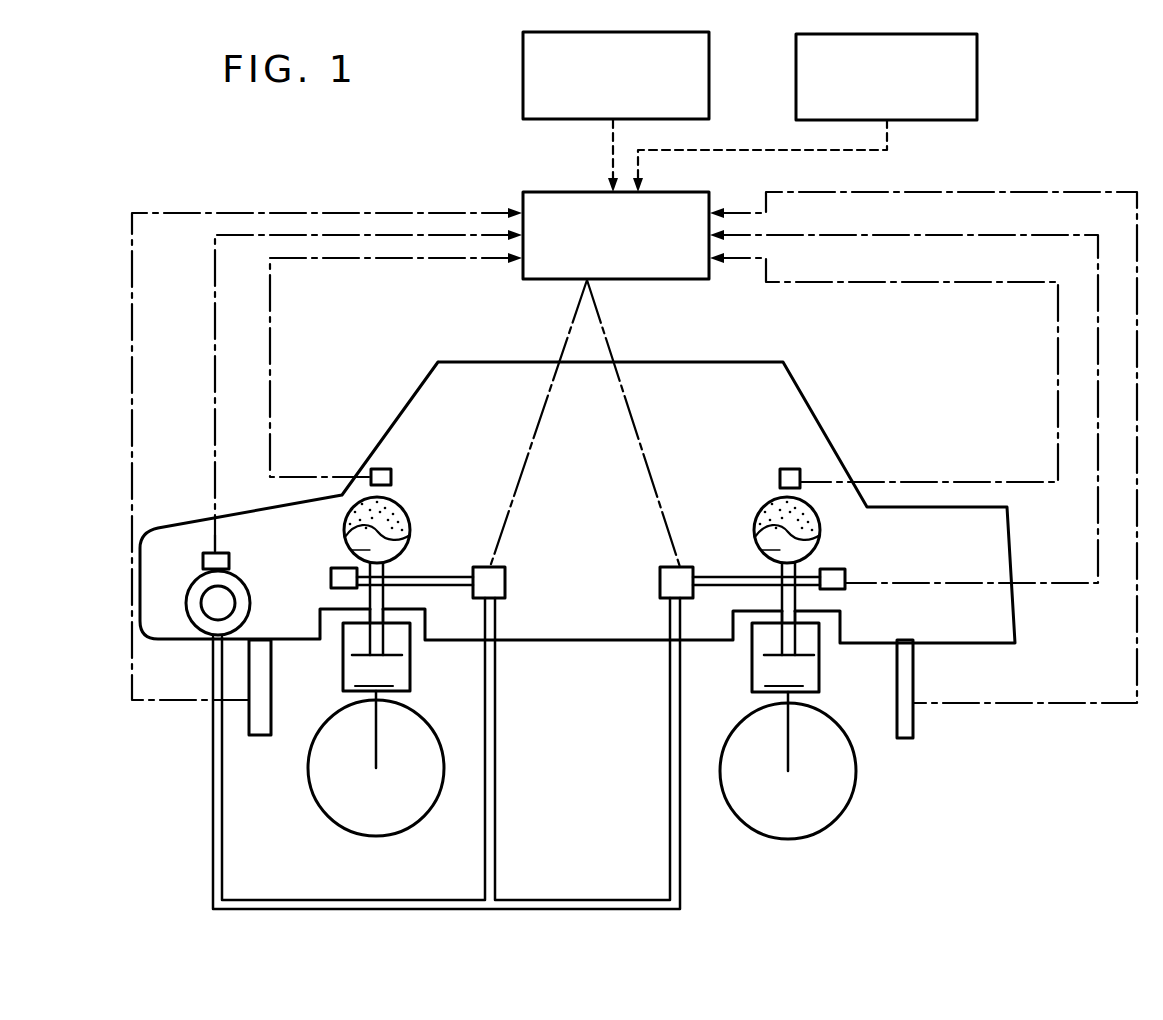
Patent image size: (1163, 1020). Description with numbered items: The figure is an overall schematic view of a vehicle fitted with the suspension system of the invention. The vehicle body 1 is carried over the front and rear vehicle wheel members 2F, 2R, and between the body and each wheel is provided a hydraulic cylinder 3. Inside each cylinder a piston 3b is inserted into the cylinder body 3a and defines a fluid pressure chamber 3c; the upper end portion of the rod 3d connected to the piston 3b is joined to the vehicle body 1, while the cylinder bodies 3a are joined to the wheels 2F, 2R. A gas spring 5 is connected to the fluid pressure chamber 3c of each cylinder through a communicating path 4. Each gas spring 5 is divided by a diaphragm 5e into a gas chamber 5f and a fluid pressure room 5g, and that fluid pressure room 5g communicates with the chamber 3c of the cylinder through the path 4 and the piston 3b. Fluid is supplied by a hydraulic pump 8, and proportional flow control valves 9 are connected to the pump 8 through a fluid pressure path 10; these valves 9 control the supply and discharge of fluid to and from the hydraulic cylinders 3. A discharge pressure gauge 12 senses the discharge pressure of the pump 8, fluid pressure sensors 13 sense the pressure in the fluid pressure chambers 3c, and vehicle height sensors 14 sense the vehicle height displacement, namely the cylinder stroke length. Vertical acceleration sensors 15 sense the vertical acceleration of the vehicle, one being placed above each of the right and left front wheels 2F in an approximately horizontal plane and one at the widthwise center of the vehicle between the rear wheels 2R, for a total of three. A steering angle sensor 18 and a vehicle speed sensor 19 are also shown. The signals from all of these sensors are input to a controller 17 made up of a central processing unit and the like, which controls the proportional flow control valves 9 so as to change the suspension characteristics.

The vehicle body 1 is at (738, 358).
The front vehicle wheel members 2F is at (422, 824).
The rear vehicle wheel members 2R is at (836, 824).
The hydraulic cylinder 3 is at (581, 669).
The cylinder body 3a is at (410, 650).
The piston 3b is at (354, 662).
The fluid pressure chamber 3c is at (579, 674).
The rod 3d is at (364, 602).
The communicating path 4 is at (384, 574).
The gas spring 5 is at (410, 518).
The diaphragm 5e is at (347, 540).
The gas chamber 5f is at (395, 505).
The fluid pressure chamber (fluid pressure room) 5g is at (374, 552).
The hydraulic pump 8 is at (204, 626).
The proportional flow control valves 9 is at (660, 580).
The fluid pressure path 10 is at (398, 898).
The discharge pressure gauge 12 is at (203, 556).
The fluid pressure sensors 13 is at (331, 578).
The vehicle height sensors 14 is at (257, 736).
The vertical acceleration sensors 15 is at (384, 466).
The controller 17 is at (565, 192).
The steering angle sensor 18 is at (710, 60).
The vehicle speed sensor 19 is at (977, 62).